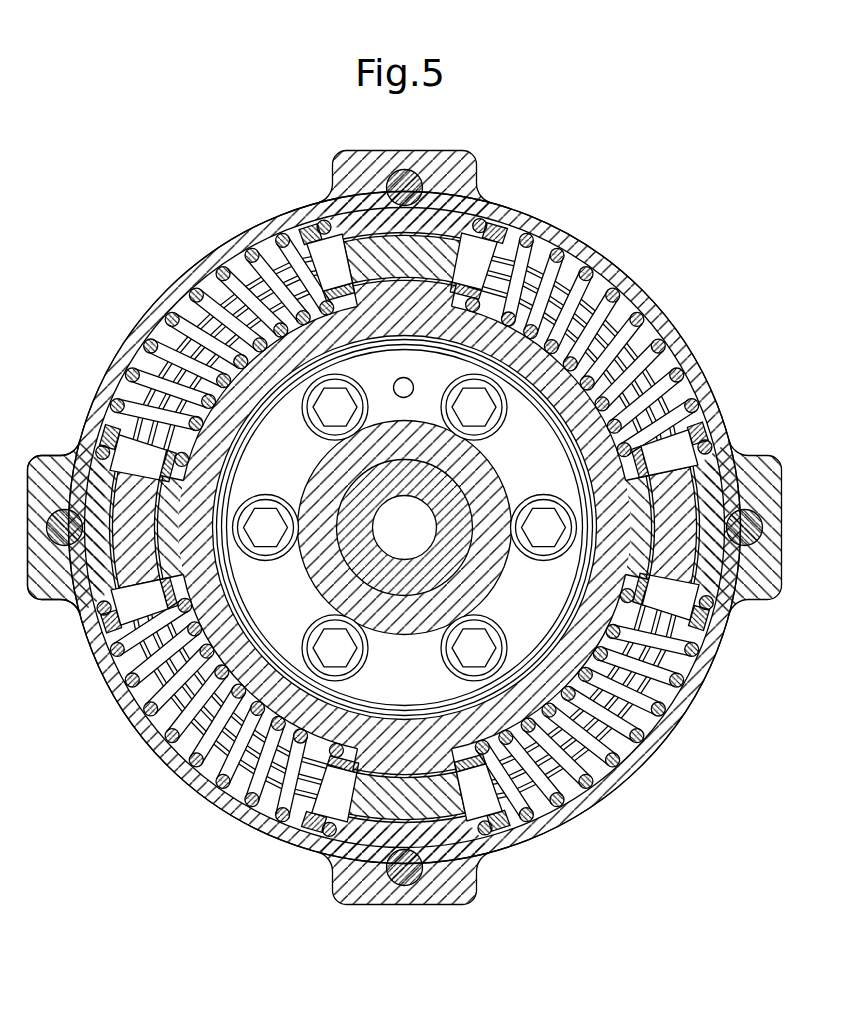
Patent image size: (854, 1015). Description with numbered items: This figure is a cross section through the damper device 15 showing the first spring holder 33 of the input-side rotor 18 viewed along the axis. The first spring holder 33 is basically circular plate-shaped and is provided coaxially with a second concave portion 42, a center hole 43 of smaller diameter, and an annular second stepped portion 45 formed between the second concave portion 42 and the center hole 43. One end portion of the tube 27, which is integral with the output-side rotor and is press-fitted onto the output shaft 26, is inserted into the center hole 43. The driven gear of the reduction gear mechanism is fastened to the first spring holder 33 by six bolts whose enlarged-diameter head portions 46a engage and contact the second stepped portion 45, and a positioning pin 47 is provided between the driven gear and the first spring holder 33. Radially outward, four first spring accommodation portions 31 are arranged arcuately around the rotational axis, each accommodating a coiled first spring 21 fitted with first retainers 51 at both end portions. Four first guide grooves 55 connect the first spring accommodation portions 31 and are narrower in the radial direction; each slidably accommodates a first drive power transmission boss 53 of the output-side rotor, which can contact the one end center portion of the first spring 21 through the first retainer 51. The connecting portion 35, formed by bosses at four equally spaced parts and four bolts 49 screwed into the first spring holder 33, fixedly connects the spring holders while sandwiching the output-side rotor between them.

The damper device 15 is at (296, 856).
The input-side rotor 18 is at (538, 215).
The first spring 21 is at (590, 262).
The output shaft 26 is at (418, 496).
The tube 27 is at (488, 563).
The first spring accommodation portion 31 is at (240, 262).
The first spring holder 33 is at (691, 707).
The connecting portion 35 is at (72, 492).
The second concave portion 42 is at (387, 349).
The center hole 43 is at (322, 472).
The second stepped portion 45 is at (302, 597).
The enlarged-diameter head portion 46a is at (456, 386).
The positioning pin 47 is at (404, 396).
The bolt 49 is at (405, 186).
The first retainer 51 is at (352, 231).
The first drive power transmission boss 53 is at (431, 243).
The first guide groove 55 is at (377, 239).